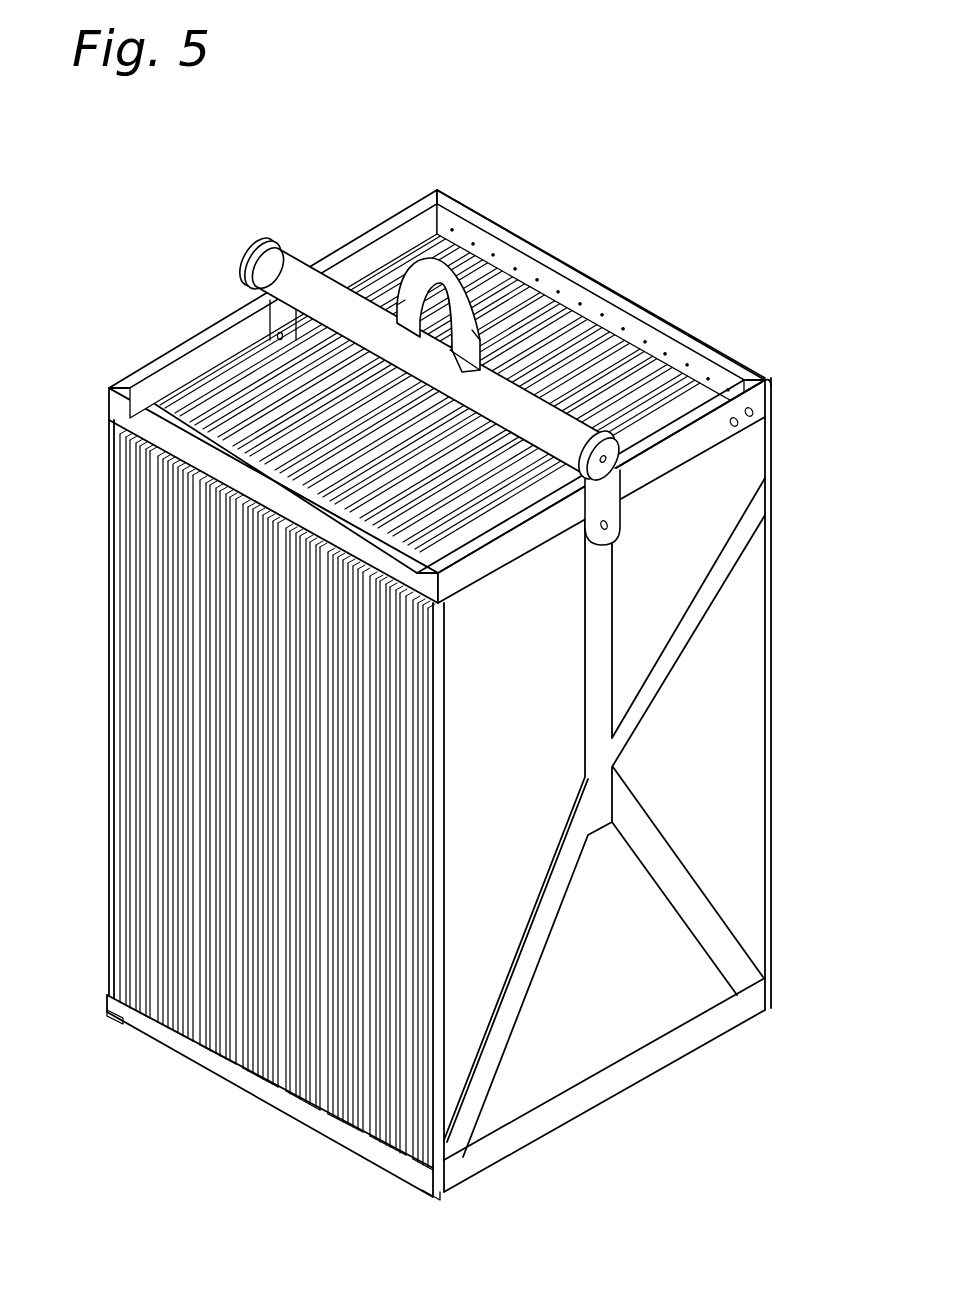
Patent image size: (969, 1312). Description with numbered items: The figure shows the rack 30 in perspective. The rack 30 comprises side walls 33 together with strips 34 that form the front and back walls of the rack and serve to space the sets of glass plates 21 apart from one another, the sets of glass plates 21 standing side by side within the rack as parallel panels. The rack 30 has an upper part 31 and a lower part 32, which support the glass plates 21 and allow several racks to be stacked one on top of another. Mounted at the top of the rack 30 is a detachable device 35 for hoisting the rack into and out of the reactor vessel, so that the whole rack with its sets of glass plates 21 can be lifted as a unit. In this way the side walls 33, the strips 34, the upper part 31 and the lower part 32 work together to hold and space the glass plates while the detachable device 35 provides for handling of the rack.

The set of glass plates 21 is at (175, 762).
The rack 30 is at (190, 322).
The upper part 31 is at (750, 388).
The lower part 32 is at (682, 1042).
The side walls 33 is at (705, 727).
The strips 34 is at (367, 1130).
The detachable device 35 is at (410, 303).